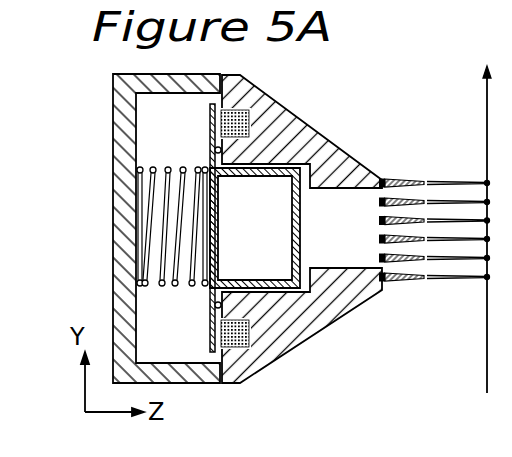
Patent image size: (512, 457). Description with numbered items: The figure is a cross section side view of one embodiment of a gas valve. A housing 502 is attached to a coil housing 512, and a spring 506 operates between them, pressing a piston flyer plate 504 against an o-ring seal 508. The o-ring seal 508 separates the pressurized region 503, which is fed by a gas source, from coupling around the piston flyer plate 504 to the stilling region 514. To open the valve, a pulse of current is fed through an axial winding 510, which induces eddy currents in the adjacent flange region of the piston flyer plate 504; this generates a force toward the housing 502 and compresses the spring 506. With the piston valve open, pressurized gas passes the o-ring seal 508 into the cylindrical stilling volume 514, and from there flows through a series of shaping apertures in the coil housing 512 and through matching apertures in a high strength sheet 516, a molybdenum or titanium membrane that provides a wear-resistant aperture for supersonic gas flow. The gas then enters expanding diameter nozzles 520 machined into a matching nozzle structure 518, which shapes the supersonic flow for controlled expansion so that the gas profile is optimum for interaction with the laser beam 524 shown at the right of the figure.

The housing 502 is at (118, 132).
The pressurized region 503 is at (157, 160).
The piston flyer plate 504 is at (213, 160).
The spring 506 is at (207, 290).
The o-ring seal 508 is at (217, 309).
The axial winding 510 is at (240, 108).
The coil housing 512 is at (290, 112).
The stilling region 514 is at (333, 206).
The high strength sheet 516 is at (384, 180).
The nozzle structure 518 is at (402, 181).
The expanding diameter nozzles 520 is at (423, 267).
The laser beam 524 is at (478, 335).